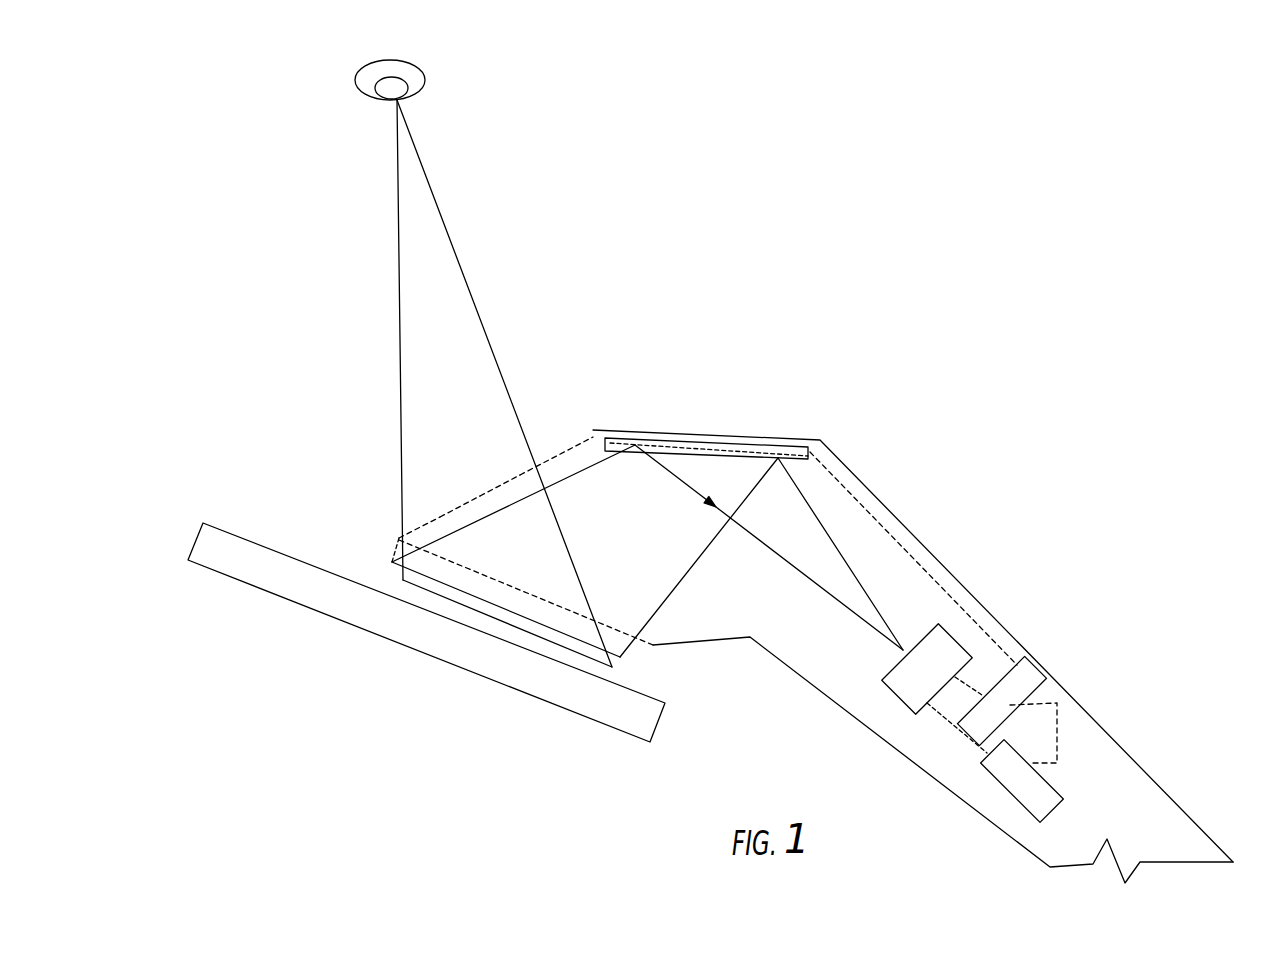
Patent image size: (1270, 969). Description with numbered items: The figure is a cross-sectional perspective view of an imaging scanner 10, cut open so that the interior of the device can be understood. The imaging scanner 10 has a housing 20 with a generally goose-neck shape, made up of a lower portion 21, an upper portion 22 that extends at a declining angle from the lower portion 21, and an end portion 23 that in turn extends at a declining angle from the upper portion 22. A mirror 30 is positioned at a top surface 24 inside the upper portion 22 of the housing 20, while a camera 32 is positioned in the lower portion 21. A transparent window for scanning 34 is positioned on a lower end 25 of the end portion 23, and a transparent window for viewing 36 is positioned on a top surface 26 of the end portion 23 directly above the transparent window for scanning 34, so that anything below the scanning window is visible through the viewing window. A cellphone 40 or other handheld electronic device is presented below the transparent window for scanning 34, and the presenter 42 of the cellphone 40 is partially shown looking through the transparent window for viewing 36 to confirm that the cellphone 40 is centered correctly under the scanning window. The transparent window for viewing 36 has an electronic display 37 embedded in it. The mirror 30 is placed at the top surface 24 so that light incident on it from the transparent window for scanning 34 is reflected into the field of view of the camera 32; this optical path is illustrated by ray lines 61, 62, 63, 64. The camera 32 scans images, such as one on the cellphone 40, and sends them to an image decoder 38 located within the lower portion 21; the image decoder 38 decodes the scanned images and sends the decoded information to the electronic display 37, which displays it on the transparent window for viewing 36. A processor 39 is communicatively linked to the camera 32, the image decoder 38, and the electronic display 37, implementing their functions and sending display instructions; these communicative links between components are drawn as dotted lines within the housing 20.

The imaging scanner 10 is at (778, 238).
The housing 20 is at (968, 592).
The lower portion 21 is at (1105, 730).
The upper portion 22 is at (795, 440).
The end portion 23 is at (553, 450).
The top surface 24 is at (593, 430).
The lower end 25 is at (655, 647).
The top surface 26 is at (430, 515).
The mirror 30 is at (797, 465).
The camera 32 is at (903, 700).
The transparent window for scanning 34 is at (400, 542).
The transparent window for viewing 36 is at (450, 505).
The electronic display 37 is at (478, 487).
The image decoder 38 is at (1007, 788).
The processor 39 is at (1025, 655).
The cellphone 40 is at (393, 643).
The presenter 42 is at (360, 73).
The ray line 61 is at (524, 511).
The ray line 62 is at (688, 504).
The ray line 63 is at (697, 582).
The ray line 64 is at (838, 570).